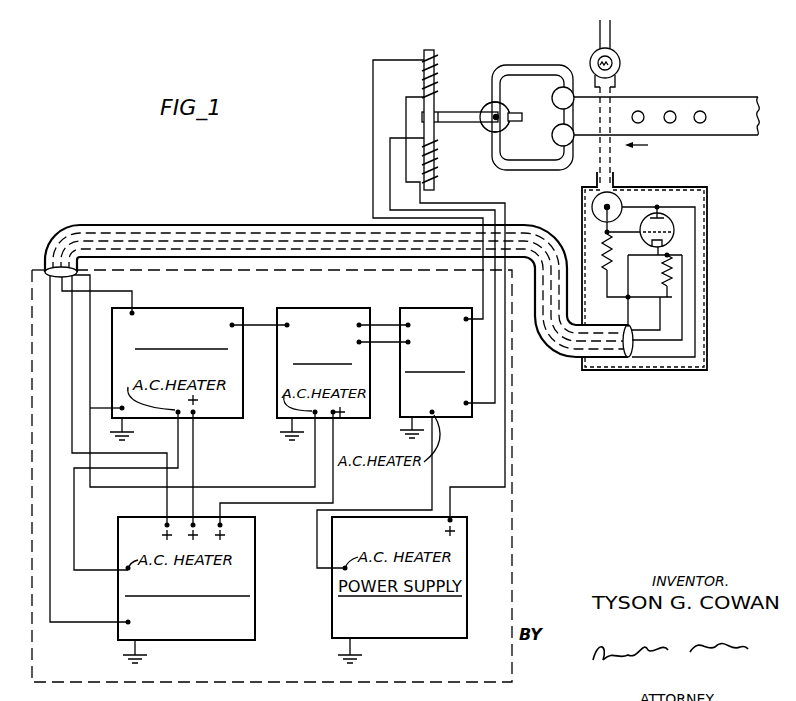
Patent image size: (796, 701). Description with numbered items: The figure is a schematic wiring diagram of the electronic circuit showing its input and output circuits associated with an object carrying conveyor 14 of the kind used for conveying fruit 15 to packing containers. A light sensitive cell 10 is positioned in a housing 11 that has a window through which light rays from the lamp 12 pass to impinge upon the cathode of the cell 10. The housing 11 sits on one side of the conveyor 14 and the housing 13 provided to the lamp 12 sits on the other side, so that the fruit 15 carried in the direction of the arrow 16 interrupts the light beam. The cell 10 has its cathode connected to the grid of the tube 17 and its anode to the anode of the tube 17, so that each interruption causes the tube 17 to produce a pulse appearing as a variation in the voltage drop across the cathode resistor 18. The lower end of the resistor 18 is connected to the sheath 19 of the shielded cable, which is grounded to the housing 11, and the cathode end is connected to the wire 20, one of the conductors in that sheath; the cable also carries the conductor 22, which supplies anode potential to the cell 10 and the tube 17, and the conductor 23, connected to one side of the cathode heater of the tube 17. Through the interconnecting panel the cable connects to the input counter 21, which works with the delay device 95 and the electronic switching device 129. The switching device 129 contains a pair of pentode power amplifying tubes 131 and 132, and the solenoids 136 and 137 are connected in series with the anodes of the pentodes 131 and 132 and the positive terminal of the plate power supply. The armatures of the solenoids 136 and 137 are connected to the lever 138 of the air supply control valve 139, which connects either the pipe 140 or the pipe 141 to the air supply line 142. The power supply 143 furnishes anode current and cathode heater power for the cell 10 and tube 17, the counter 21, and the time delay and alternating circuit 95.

The light sensitive cell 10 is at (594, 201).
The housing 11 is at (707, 256).
The lamp 12 is at (611, 58).
The housing 13 is at (620, 63).
The conveyor 14 is at (678, 130).
The fruit 15 is at (702, 111).
The arrow 16 is at (645, 147).
The tube 17 is at (673, 226).
The cathode resistor 18 is at (673, 279).
The sheath 19 is at (553, 343).
The wire 20 is at (686, 320).
The counter 21 is at (158, 309).
The conductor 22 is at (699, 346).
The conductor 23 is at (665, 311).
The delay device 95 is at (305, 309).
The electronic switching device 129 is at (403, 309).
The pentode 131 is at (373, 110).
The pentode 132 is at (390, 185).
The solenoid 136 is at (436, 72).
The solenoid 137 is at (436, 163).
The lever 138 is at (447, 111).
The air supply control valve 139 is at (487, 127).
The pipe 140 is at (534, 69).
The pipe 141 is at (510, 168).
The air supply line 142 is at (516, 113).
The power supply 143 is at (183, 641).